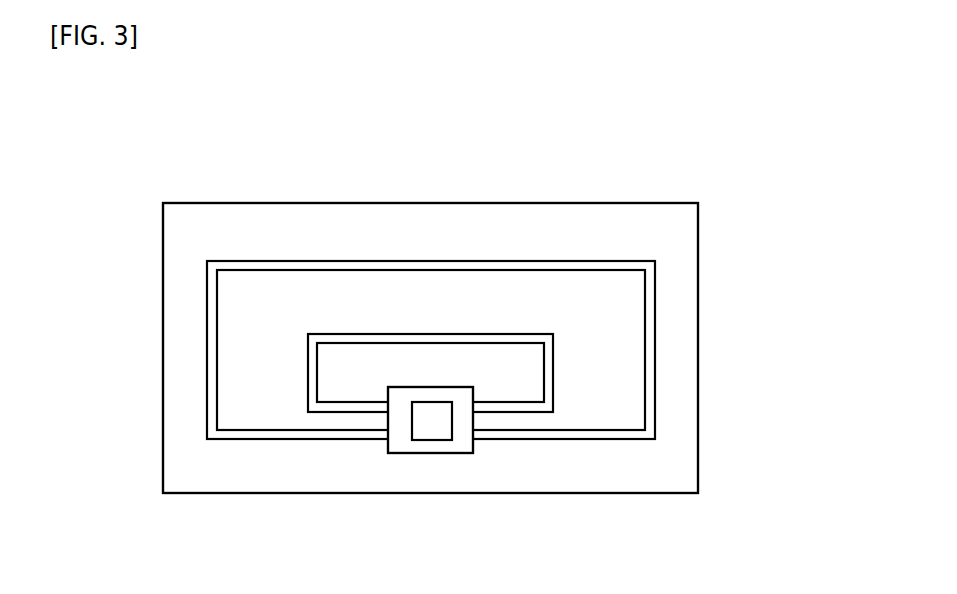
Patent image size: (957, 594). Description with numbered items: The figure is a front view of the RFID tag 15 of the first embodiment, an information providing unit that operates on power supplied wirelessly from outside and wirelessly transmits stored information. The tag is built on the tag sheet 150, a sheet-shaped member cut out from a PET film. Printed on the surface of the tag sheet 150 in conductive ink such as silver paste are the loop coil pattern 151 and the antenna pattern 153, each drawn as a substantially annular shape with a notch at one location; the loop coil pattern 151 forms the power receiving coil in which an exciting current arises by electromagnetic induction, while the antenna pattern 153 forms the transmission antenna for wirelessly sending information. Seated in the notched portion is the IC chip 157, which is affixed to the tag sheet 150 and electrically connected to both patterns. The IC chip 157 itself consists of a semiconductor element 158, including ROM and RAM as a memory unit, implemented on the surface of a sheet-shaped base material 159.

The RFID tag 15 is at (710, 217).
The tag sheet 150 is at (682, 454).
The loop coil pattern 151 is at (648, 400).
The antenna pattern 153 is at (550, 370).
The IC chip 157 is at (407, 456).
The semiconductor element 158 is at (433, 410).
The base material 159 is at (402, 397).